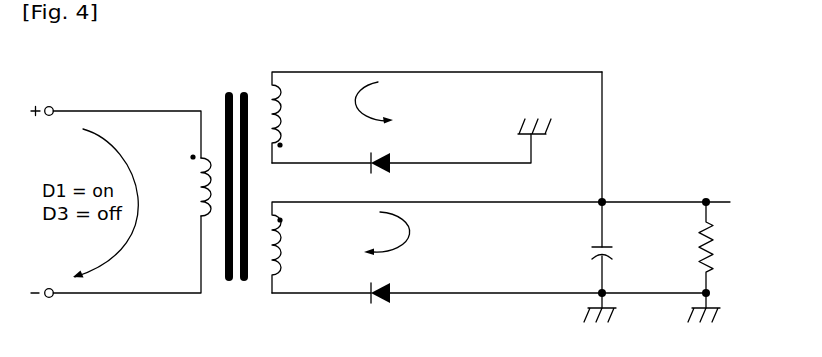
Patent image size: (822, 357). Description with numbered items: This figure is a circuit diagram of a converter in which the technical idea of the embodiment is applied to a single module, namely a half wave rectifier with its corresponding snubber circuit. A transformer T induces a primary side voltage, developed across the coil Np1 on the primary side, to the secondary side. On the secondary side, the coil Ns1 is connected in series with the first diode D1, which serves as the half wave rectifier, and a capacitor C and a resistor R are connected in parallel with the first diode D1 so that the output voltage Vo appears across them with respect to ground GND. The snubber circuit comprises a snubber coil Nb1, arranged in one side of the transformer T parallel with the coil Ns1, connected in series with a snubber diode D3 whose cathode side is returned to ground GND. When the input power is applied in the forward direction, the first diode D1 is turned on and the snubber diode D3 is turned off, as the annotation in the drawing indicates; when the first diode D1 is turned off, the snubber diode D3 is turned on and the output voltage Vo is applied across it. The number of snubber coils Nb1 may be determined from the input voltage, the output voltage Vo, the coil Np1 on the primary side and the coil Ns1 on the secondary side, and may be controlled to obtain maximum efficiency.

The transformer T is at (228, 91).
The coil on a primary side Np1 is at (188, 185).
The snubber coil Nb1 is at (437, 117).
The coil on a secondary side Ns1 is at (501, 247).
The snubber diode D3 is at (405, 151).
The first diode D1 is at (399, 281).
The capacitor C is at (593, 252).
The output voltage Vo is at (630, 252).
The resistor R is at (714, 255).
The ground GND is at (619, 224).